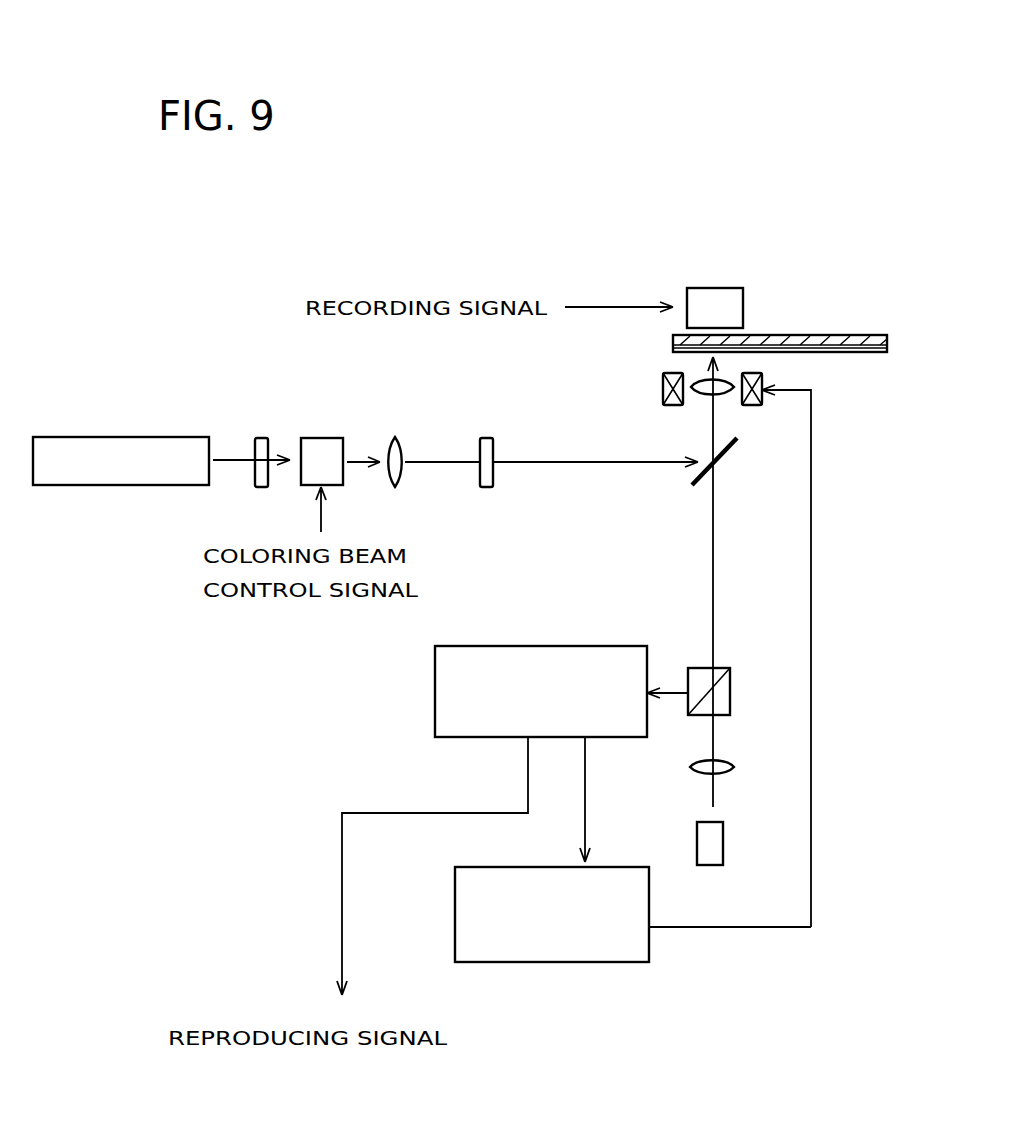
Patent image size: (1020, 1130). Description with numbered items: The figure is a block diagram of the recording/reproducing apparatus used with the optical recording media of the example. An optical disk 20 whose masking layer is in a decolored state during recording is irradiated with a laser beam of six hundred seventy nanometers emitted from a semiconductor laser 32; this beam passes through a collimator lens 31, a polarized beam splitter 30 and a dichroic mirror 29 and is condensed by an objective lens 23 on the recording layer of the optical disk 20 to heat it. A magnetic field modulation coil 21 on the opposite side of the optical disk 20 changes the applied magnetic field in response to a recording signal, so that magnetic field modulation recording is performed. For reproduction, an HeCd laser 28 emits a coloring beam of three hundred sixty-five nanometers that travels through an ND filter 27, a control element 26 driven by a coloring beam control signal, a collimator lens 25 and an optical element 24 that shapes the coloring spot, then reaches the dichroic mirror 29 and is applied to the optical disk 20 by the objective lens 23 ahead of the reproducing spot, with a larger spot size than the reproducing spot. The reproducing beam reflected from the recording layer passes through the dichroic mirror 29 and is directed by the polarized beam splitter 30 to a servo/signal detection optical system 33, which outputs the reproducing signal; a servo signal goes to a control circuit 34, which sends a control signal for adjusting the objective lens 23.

The optical disk 20 is at (812, 335).
The magnetic field modulation coil 21 is at (710, 300).
The objective lens 23 is at (760, 373).
The optical element 24 is at (490, 447).
The collimator lens 25 is at (398, 440).
The control element 26 is at (326, 455).
The ND filter 27 is at (262, 437).
The HeCd laser 28 is at (155, 445).
The dichroic mirror 29 is at (732, 448).
The polarized beam splitter 30 is at (728, 668).
The collimator lens 31 is at (718, 760).
The semiconductor laser 32 is at (723, 835).
The servo/signal detection optical system 33 is at (550, 665).
The control circuit 34 is at (562, 960).